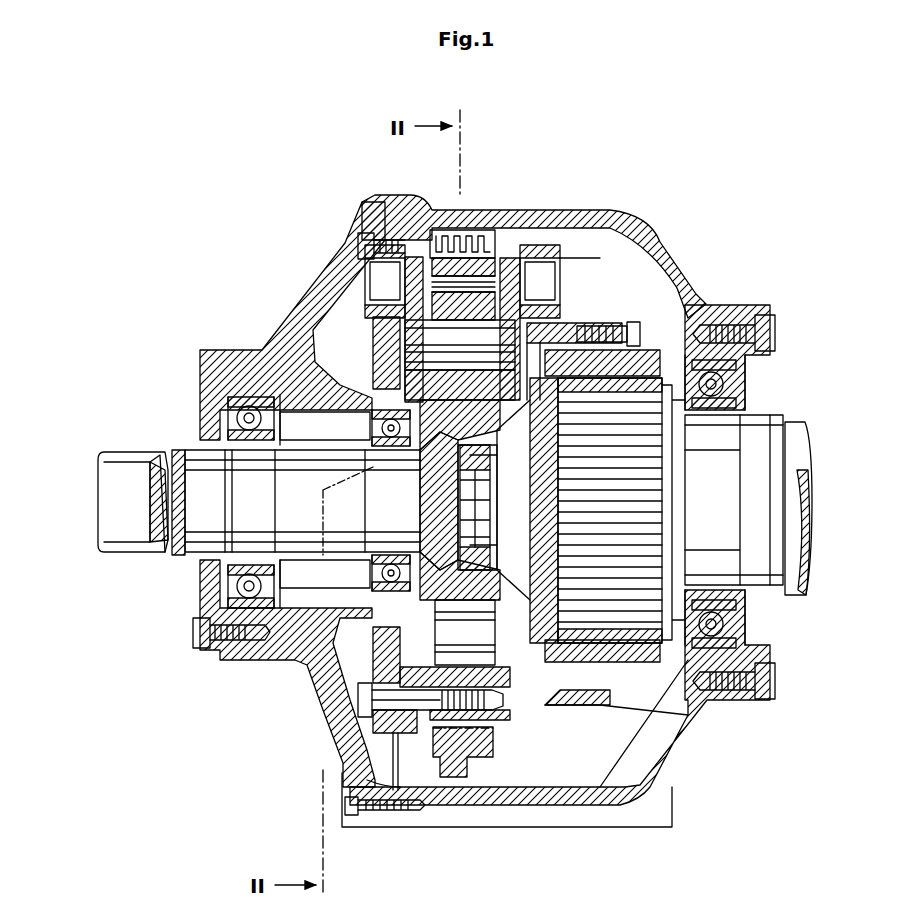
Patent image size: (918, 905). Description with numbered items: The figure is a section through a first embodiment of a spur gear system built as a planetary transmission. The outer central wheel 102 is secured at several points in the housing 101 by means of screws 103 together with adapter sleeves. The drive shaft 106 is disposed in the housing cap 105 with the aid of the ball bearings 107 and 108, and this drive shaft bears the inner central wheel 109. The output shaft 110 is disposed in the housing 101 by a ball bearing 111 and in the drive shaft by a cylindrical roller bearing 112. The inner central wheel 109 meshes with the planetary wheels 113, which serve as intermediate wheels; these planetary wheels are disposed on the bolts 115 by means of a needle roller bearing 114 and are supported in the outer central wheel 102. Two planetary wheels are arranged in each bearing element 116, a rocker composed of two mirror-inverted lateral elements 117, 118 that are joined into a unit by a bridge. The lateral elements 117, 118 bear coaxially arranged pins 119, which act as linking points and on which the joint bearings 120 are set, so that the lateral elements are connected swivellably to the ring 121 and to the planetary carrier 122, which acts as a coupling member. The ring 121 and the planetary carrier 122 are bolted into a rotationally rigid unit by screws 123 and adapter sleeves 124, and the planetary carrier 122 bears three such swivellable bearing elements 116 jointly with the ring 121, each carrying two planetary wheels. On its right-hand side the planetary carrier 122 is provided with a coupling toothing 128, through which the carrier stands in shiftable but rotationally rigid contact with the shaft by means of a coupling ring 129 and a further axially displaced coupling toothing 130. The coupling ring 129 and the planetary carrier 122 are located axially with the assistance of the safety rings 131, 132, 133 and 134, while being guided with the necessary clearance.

The housing 101 is at (470, 212).
The outer central wheel 102 is at (492, 262).
The screws 103 is at (434, 230).
The housing cap 105 is at (300, 345).
The drive shaft 106 is at (115, 479).
The ball bearing 107 is at (240, 418).
The ball bearing 108 is at (390, 462).
The inner central wheel 109 is at (457, 600).
The output shaft 110 is at (800, 425).
The ball bearing 111 is at (752, 447).
The cylindrical roller bearing 112 is at (506, 465).
The planetary wheels 113 is at (640, 421).
The needle roller bearing 114 is at (460, 360).
The bolts 115 is at (373, 352).
The bearing element 116 is at (576, 277).
The lateral element 117 is at (412, 257).
The lateral element 118 is at (517, 287).
The pins 119 is at (365, 285).
The joint bearings 120 is at (372, 250).
The ring 121 is at (362, 233).
The planetary carrier 122 is at (556, 325).
The screws 123 is at (360, 690).
The adapter sleeves 124 is at (370, 722).
The coupling toothing 128 is at (595, 325).
The coupling ring 129 is at (635, 355).
The coupling toothing 130 is at (735, 315).
The safety ring 131 is at (612, 695).
The safety ring 132 is at (560, 684).
The safety ring 133 is at (638, 600).
The safety ring 134 is at (589, 600).